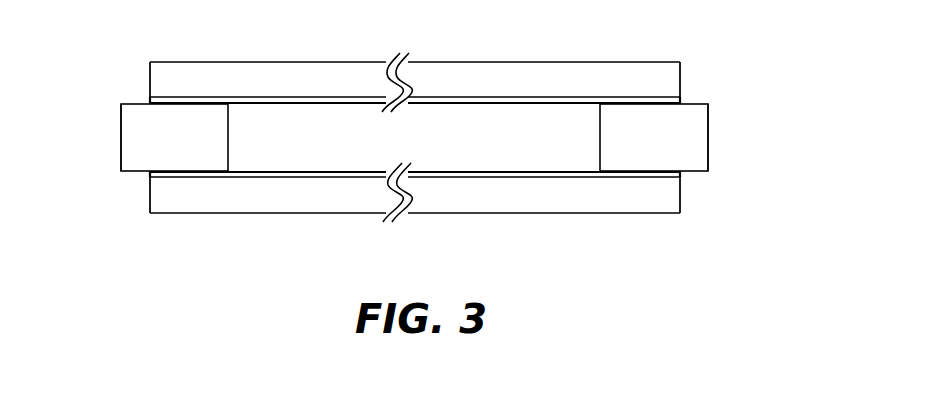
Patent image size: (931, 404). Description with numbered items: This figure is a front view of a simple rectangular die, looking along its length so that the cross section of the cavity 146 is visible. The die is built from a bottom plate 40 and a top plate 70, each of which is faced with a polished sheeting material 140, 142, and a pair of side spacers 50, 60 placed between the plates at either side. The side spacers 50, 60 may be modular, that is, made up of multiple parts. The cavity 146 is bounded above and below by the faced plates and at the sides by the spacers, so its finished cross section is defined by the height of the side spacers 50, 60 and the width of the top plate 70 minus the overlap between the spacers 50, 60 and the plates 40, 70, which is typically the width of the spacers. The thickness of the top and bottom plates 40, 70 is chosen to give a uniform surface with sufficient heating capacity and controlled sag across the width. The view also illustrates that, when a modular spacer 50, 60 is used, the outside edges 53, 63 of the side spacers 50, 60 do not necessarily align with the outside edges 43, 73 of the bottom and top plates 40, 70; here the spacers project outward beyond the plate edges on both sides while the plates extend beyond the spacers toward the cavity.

The bottom plate 40 is at (655, 202).
The outside edge of bottom plate 43 is at (150, 199).
The side spacer 50 is at (697, 121).
The outside edge of side spacer 53 is at (708, 152).
The side spacer 60 is at (137, 127).
The outside edge of side spacer 63 is at (121, 155).
The top plate 70 is at (643, 72).
The outside edge of top plate 73 is at (150, 87).
The polished sheeting material 140 is at (312, 103).
The polished sheeting material 142 is at (291, 172).
The cavity 146 is at (368, 145).